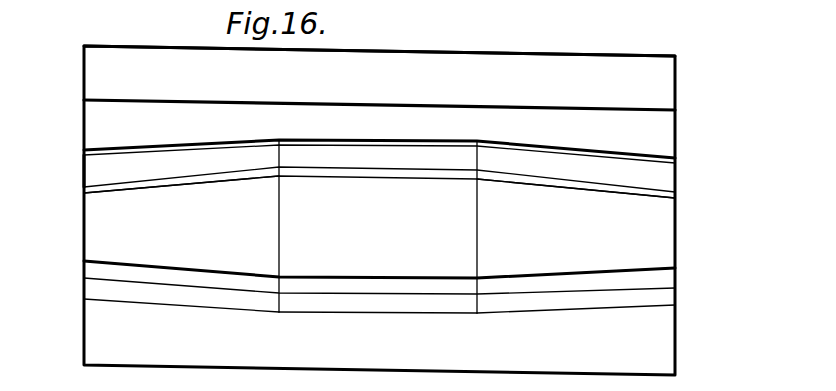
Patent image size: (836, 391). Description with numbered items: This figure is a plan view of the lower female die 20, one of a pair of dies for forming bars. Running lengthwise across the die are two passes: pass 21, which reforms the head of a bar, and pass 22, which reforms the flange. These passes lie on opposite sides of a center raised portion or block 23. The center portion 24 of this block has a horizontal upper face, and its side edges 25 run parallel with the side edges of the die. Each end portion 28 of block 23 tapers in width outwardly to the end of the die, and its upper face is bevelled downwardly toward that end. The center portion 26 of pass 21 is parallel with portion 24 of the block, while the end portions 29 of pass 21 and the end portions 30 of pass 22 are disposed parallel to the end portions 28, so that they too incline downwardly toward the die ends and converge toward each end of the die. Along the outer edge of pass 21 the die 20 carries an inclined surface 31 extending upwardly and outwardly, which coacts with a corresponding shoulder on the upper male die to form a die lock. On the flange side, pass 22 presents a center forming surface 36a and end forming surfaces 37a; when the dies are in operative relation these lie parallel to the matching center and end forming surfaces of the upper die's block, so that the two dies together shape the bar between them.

The lower female die 20 is at (660, 86).
The inclined surface 31 is at (661, 130).
The center portion of pass 21 26 is at (349, 142).
The side edges of center portion 25 is at (316, 173).
The pass for reforming the head 21 is at (661, 174).
The end portions of pass 21 29 is at (93, 168).
The end portion of block 28 is at (379, 227).
The center portion of block 24 is at (378, 226).
The center raised portion or block 23 is at (686, 240).
The pass for reforming the flange 22 is at (662, 278).
The end portions of pass 22 30 is at (92, 270).
The end forming surfaces of pass 22 37a is at (130, 302).
The center forming surface of pass 22 36a is at (360, 310).